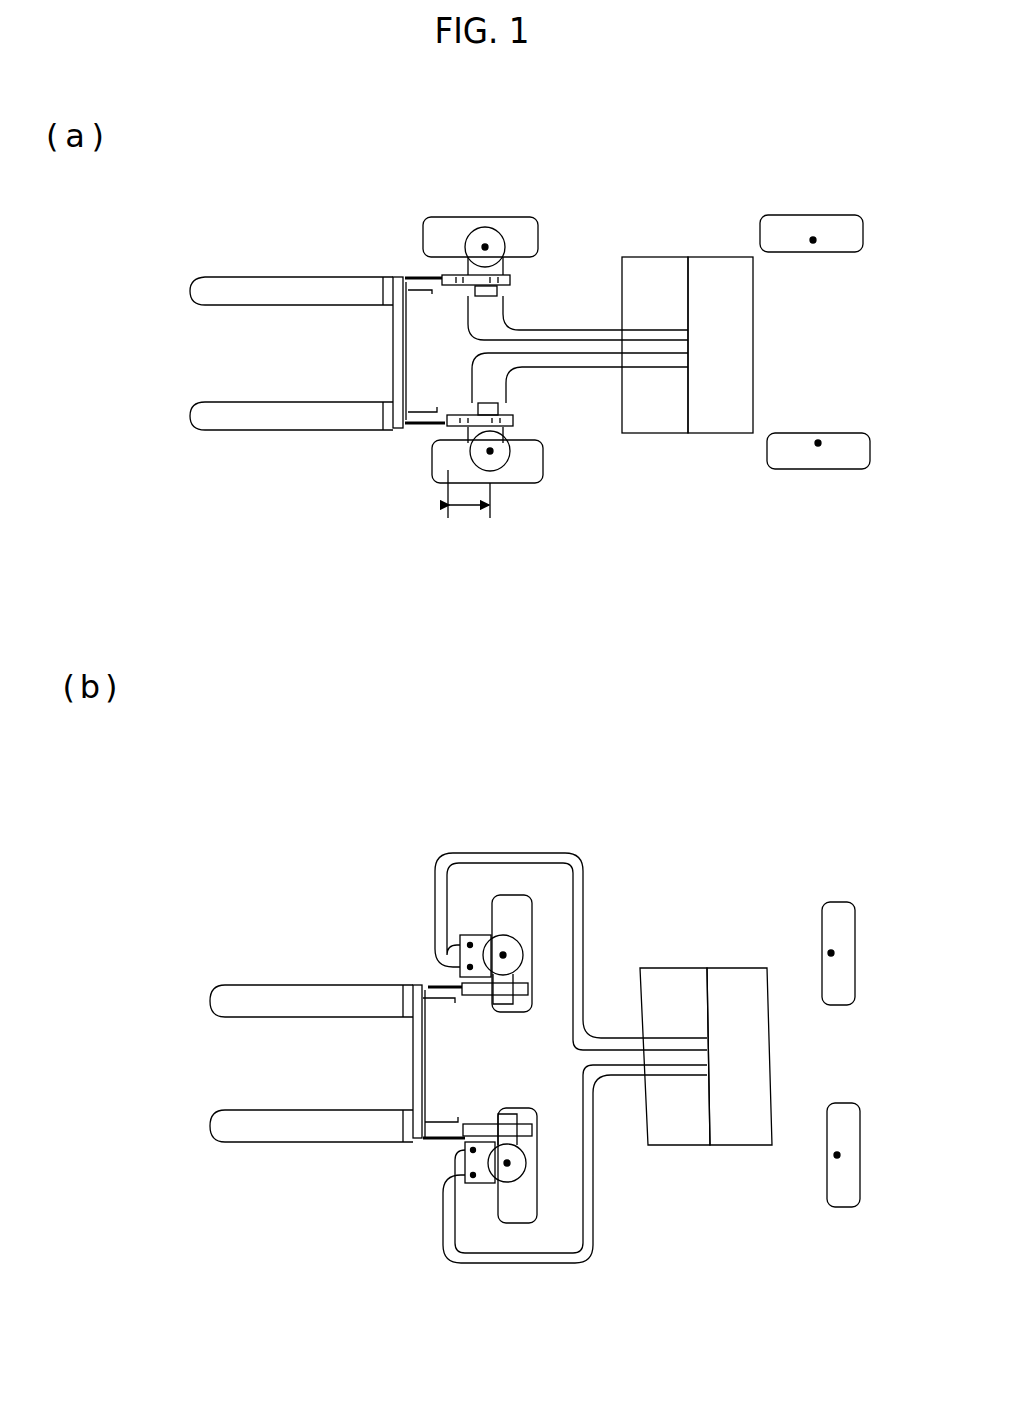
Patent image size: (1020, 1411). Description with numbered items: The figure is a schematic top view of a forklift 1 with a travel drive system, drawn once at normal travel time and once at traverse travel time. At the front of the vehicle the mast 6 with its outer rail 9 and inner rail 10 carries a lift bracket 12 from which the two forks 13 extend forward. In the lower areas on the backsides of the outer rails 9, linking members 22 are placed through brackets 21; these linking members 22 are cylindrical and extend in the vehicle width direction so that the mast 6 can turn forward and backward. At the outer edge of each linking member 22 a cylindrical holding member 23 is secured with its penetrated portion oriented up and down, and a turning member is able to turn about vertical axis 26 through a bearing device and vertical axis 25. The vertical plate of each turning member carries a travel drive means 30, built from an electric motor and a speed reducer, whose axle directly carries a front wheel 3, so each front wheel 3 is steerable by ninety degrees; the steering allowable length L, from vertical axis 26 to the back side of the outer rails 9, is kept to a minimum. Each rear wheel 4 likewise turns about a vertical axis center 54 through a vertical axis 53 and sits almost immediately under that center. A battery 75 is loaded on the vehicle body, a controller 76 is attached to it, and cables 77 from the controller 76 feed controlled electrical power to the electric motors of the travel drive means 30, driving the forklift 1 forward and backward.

The forklift 1 is at (734, 206).
The front wheel 3 is at (551, 725).
The rear wheel 4 is at (839, 715).
The mast 6 is at (412, 432).
The outer rail 9 is at (418, 277).
The inner rail 10 is at (414, 291).
The lift bracket 12 is at (395, 372).
The fork 13 is at (247, 412).
The bracket 21 is at (512, 280).
The linking member 22 is at (503, 268).
The holding member 23 is at (577, 725).
The vertical axis 25 is at (577, 725).
The vertical axis 26 is at (484, 243).
The travel drive means 30 is at (462, 293).
The vertical axis 53 is at (843, 722).
The vertical axis center 54 is at (813, 244).
The battery 75 is at (675, 434).
The controller 76 is at (729, 434).
The cable 77 is at (604, 340).